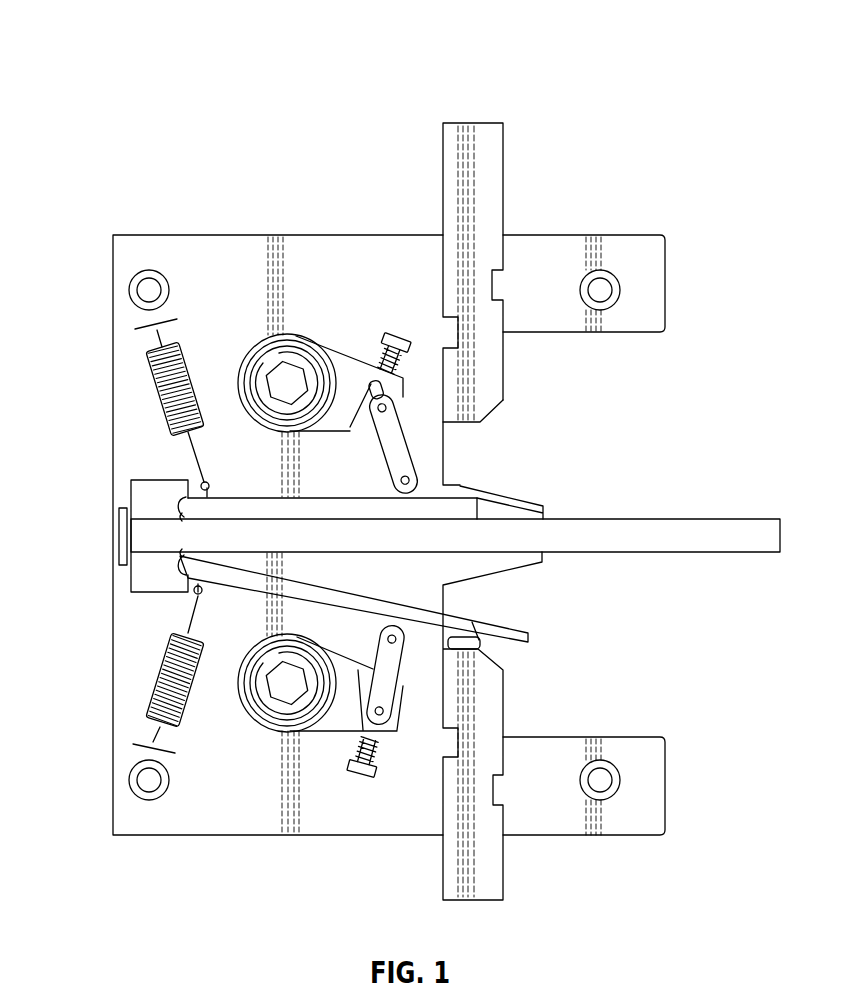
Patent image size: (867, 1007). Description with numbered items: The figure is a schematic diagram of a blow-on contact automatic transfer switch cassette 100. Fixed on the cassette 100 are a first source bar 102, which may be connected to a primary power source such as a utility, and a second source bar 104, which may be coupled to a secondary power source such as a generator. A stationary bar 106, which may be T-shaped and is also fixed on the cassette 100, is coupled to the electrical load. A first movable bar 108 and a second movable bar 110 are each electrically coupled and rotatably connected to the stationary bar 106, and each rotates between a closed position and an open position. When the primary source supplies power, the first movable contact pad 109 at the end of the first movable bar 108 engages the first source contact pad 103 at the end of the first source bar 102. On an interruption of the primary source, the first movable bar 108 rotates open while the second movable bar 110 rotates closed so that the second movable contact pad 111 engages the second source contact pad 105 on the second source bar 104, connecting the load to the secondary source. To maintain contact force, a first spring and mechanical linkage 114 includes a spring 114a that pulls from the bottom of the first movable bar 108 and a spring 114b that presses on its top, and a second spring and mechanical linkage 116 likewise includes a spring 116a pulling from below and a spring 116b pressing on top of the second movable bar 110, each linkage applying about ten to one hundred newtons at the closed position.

The automatic transfer switch cassette 100 is at (683, 55).
The first source bar 102 is at (505, 167).
The first source contact pad 103 is at (466, 426).
The second source bar 104 is at (510, 848).
The second source contact pad 105 is at (488, 652).
The stationary bar 106 is at (620, 519).
The first movable bar 108 is at (448, 507).
The first movable contact pad 109 is at (517, 502).
The second movable bar 110 is at (452, 618).
The second movable contact pad 111 is at (517, 630).
The first spring and mechanical linkage 114 is at (385, 338).
The spring 114a is at (133, 362).
The spring 114b is at (398, 330).
The second spring and mechanical linkage 116 is at (350, 760).
The spring 116a is at (132, 682).
The spring 116b is at (380, 750).